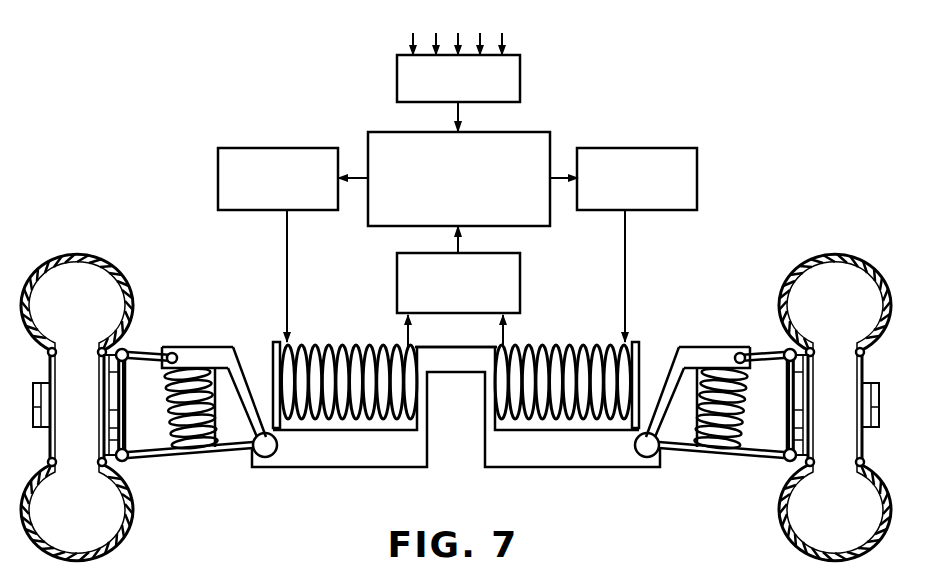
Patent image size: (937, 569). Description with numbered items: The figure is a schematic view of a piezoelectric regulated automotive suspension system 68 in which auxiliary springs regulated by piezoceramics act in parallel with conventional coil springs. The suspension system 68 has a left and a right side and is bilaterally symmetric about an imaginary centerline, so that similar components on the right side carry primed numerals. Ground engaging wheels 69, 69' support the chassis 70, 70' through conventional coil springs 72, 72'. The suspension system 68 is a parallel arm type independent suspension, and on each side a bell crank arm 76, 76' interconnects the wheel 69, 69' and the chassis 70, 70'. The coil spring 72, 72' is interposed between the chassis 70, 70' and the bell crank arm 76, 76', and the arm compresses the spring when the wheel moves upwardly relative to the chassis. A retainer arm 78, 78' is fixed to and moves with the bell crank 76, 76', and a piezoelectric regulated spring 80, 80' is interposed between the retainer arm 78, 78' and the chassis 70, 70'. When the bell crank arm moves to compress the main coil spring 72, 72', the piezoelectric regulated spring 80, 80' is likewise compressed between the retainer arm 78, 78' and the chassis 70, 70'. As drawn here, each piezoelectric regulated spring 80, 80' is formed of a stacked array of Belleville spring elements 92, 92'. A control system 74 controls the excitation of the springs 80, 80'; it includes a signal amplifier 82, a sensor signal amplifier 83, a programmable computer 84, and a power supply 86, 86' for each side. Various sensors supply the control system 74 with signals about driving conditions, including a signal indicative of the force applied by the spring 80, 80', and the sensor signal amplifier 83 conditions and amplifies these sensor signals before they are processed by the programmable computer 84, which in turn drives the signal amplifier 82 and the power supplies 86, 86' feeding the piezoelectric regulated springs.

The suspension system 68 is at (156, 233).
The ground engaging wheel 69 is at (77, 382).
The ground engaging wheel 69' is at (835, 382).
The chassis 70 is at (354, 442).
The chassis 70' is at (558, 441).
The coil spring 72 is at (213, 376).
The coil spring 72' is at (698, 376).
The control system 74 is at (484, 180).
The bell crank arm 76 is at (196, 428).
The bell crank arm 76' is at (715, 436).
The retainer arm 78 is at (251, 357).
The retainer arm 78' is at (657, 357).
The piezoelectric regulated spring 80 is at (385, 349).
The piezoelectric regulated spring 80' is at (527, 347).
The signal amplifier 82 is at (520, 277).
The sensor signal amplifier 83 is at (520, 86).
The programmable computer 84 is at (370, 227).
The power supply 86 is at (265, 153).
The power supply 86' is at (676, 175).
The Belleville spring element 92 is at (349, 351).
The Belleville spring element 92' is at (562, 354).